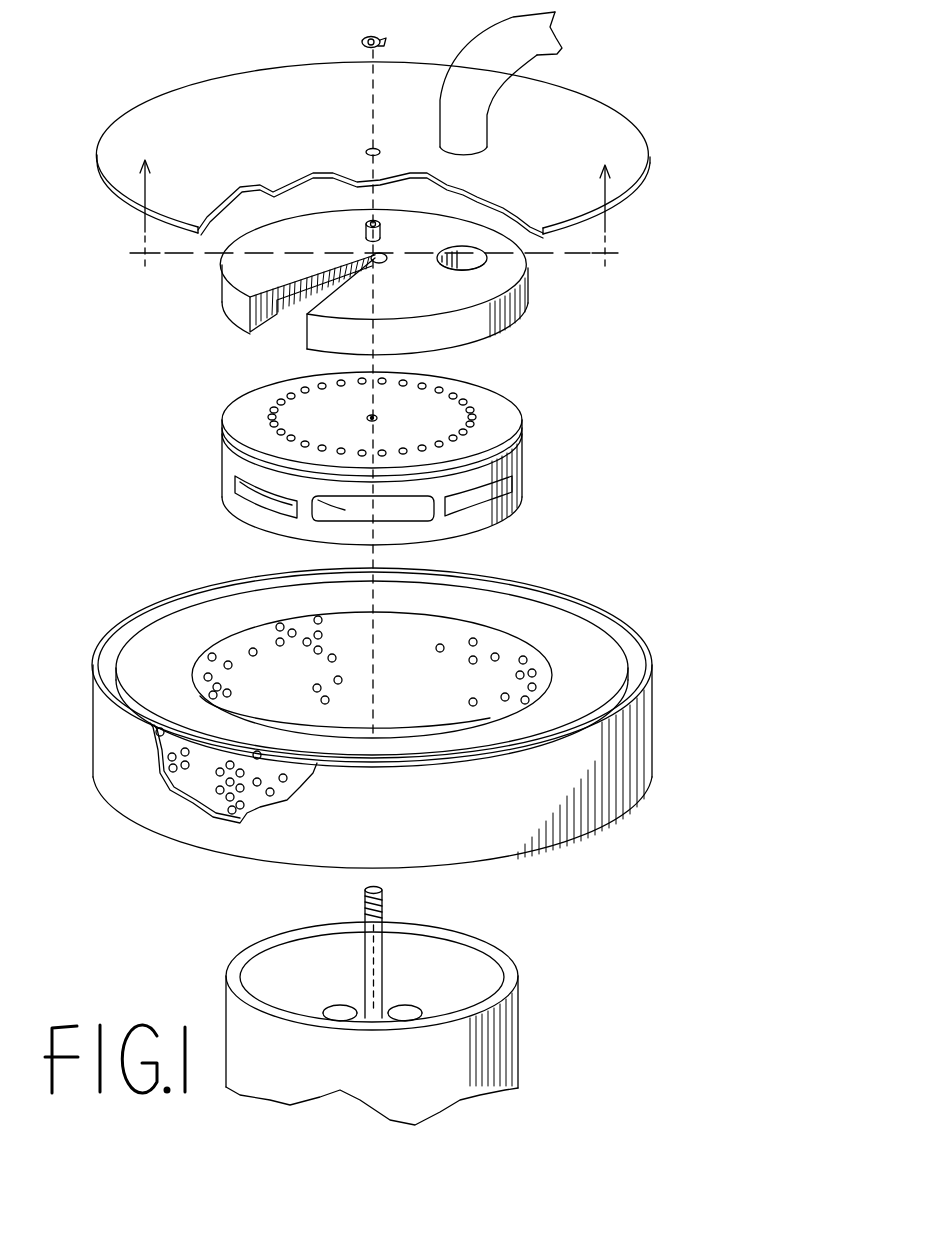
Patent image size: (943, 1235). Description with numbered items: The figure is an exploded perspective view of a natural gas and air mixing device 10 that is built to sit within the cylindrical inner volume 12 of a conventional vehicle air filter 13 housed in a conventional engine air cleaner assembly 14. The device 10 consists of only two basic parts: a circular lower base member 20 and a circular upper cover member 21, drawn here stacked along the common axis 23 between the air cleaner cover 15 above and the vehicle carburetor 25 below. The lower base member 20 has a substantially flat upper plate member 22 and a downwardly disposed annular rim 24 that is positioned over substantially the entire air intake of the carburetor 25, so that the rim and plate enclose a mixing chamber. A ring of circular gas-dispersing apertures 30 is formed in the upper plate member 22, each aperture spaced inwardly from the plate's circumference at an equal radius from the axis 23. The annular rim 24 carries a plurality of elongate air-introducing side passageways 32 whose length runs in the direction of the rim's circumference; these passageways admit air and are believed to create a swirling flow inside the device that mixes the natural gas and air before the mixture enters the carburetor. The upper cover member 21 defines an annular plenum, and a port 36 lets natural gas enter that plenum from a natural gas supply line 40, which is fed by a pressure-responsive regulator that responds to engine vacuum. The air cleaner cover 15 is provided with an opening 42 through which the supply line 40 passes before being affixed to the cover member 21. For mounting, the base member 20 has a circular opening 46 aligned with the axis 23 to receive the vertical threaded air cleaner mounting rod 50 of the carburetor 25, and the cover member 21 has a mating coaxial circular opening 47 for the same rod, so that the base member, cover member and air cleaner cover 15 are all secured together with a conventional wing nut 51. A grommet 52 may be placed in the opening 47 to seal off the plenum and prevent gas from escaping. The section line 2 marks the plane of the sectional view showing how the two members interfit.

The natural gas and air mixing device 10 is at (176, 388).
The cylindrical inner volume 12 is at (452, 638).
The vehicle air filter 13 is at (578, 652).
The engine air cleaner assembly 14 is at (355, 713).
The air cleaner cover 15 is at (300, 80).
The section line 2- 2 is at (374, 203).
The lower base member 20 is at (359, 469).
The upper cover member 21 is at (230, 296).
The upper plate member 22 is at (497, 400).
The axis 23 is at (362, 105).
The annular rim 24 is at (226, 456).
The vehicle carburetor 25 is at (518, 1016).
The gas-dispersing apertures 30 is at (313, 438).
The air-introducing side passageways 32 is at (343, 503).
The port 36 is at (370, 270).
The natural gas supply line 40 is at (526, 97).
The opening 42 is at (480, 158).
The circular opening 46 is at (380, 418).
The coaxial circular opening 47 is at (366, 256).
The air cleaner mounting rod 50 is at (388, 903).
The wing nut 51 is at (392, 40).
The grommet 52 is at (383, 232).